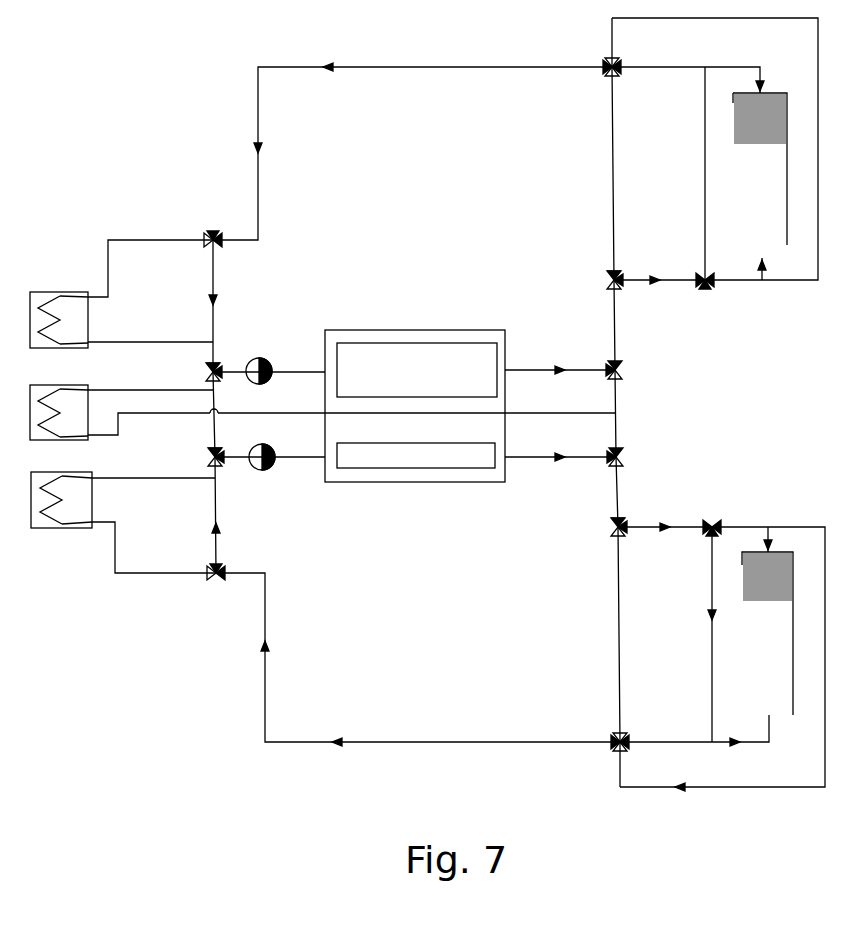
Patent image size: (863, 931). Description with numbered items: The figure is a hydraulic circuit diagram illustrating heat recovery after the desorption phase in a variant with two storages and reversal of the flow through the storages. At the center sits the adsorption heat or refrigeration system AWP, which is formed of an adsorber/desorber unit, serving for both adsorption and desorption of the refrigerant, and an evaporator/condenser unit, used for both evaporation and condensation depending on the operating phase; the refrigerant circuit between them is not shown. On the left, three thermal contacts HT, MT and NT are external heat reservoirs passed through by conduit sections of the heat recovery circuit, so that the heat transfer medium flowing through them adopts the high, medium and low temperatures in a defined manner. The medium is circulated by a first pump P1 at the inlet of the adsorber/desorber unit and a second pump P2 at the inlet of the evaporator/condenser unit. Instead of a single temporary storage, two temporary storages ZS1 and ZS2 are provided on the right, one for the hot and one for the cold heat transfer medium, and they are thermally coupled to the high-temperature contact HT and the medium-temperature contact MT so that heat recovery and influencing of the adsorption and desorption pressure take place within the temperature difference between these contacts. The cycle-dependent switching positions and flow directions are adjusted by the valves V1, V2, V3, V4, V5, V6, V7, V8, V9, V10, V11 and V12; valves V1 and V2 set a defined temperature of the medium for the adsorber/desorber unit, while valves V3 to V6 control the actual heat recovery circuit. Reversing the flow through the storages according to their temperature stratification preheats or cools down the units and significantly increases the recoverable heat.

The valve V1 is at (200, 372).
The valve V2 is at (627, 370).
The valve V3 is at (202, 457).
The valve V4 is at (628, 458).
The valve V5 is at (604, 527).
The valve V6 is at (215, 583).
The valve V7 is at (601, 280).
The valve V8 is at (211, 228).
The valve V9 is at (709, 519).
The valve V10 is at (710, 293).
The valve V11 is at (606, 752).
The valve V12 is at (599, 55).
The first pump P1 is at (259, 361).
The second pump P2 is at (262, 469).
The high-temperature contact HT is at (59, 320).
The medium-temperature contact MT is at (59, 412).
The low-temperature contact NT is at (61, 500).
The adsorption heat or refrigeration system AWP is at (462, 340).
The temporary storage ZS1 is at (794, 552).
The temporary storage ZS2 is at (798, 280).